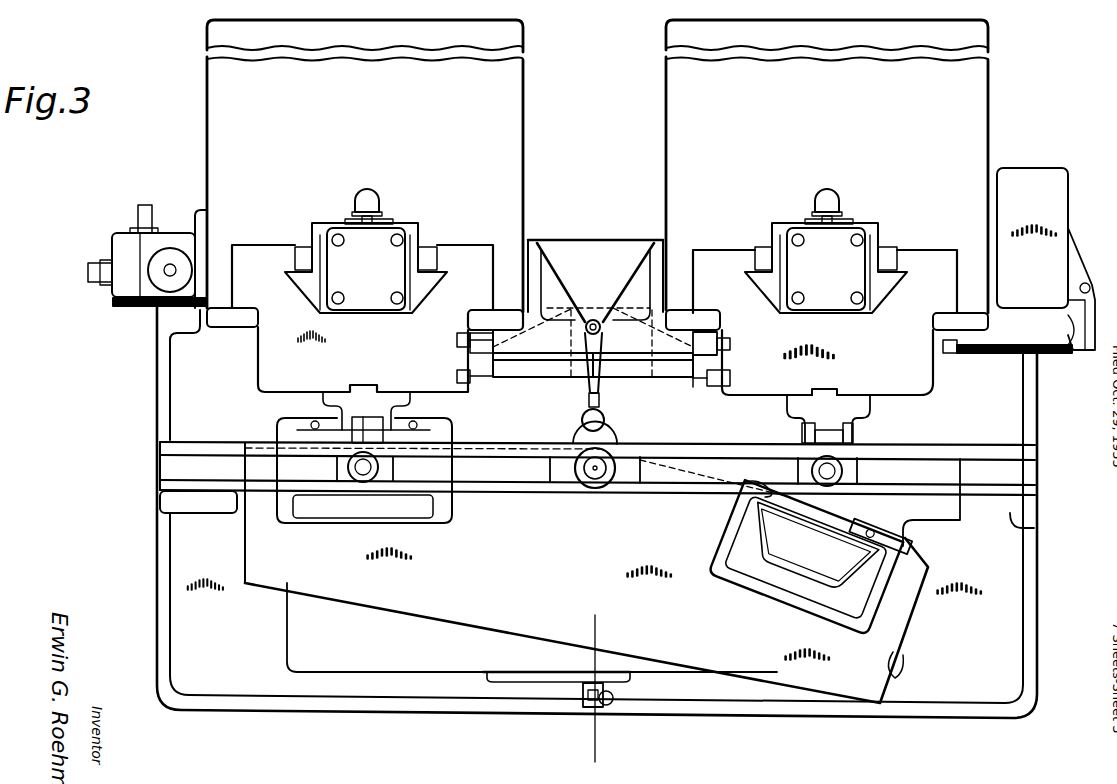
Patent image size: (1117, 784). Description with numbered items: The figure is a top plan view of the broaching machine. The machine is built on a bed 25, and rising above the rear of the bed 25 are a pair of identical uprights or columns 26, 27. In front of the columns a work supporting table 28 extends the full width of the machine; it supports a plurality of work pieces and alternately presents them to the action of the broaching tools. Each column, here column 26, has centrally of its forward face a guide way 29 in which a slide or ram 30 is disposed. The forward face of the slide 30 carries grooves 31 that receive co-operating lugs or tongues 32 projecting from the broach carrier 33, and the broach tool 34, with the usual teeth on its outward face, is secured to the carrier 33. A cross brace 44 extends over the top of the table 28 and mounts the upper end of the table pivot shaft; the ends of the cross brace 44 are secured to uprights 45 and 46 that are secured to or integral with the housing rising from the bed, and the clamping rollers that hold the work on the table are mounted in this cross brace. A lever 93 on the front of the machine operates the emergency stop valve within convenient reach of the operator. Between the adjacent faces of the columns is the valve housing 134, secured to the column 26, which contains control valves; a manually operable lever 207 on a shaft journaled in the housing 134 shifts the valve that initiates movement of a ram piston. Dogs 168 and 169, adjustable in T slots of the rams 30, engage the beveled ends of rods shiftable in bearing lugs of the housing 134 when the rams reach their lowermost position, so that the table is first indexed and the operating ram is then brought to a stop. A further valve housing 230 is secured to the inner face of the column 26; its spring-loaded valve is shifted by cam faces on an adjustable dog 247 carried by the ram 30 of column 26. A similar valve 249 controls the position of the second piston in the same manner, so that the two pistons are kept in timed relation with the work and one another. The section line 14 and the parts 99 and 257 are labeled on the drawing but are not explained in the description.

The section line 14 is at (576, 755).
The bed 25 is at (1030, 591).
The column 26 is at (990, 138).
The column 27 is at (527, 157).
The work supporting table 28 is at (388, 600).
The guide way 29 is at (957, 250).
The slide or ram 30 is at (915, 386).
The grooves 31 is at (851, 380).
The lugs or tongues 32 is at (812, 389).
The broach carrier 33 is at (870, 411).
The broach tool 34 is at (802, 436).
The cross brace 44 is at (222, 446).
The upright 45 is at (1034, 528).
The upright 46 is at (188, 505).
The lever 93 is at (610, 704).
The bracket 99 is at (517, 677).
The housing 134 is at (606, 249).
The dog 168 is at (480, 360).
The dog 169 is at (720, 368).
The manually operable lever 207 is at (599, 418).
The housing 230 is at (645, 356).
The adjustable dog 247 is at (717, 330).
The valve 249 is at (512, 357).
The bucket 257 is at (728, 530).